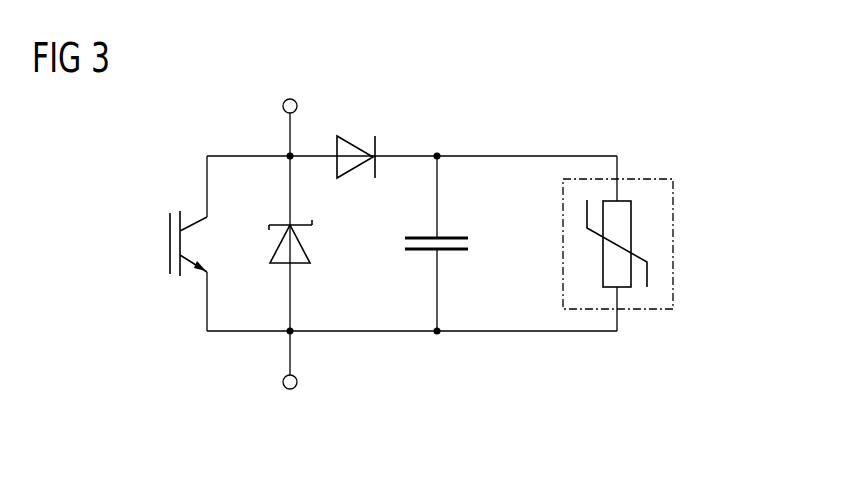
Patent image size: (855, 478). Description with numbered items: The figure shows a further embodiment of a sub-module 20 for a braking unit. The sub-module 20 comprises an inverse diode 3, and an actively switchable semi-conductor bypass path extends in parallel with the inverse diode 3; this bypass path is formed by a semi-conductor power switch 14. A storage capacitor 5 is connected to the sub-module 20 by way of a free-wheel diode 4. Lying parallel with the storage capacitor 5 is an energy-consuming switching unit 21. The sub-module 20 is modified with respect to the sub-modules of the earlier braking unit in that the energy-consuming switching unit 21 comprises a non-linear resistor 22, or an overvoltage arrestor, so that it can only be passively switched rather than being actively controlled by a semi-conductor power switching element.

The inverse diode 3 is at (300, 245).
The free-wheel diode 4 is at (362, 140).
The storage capacitor 5 is at (453, 251).
The semi-conductor power switch 14 is at (170, 245).
The sub-module 20 is at (534, 122).
The energy-consuming switching unit 21 is at (673, 206).
The non-linear resistor 22 is at (631, 238).